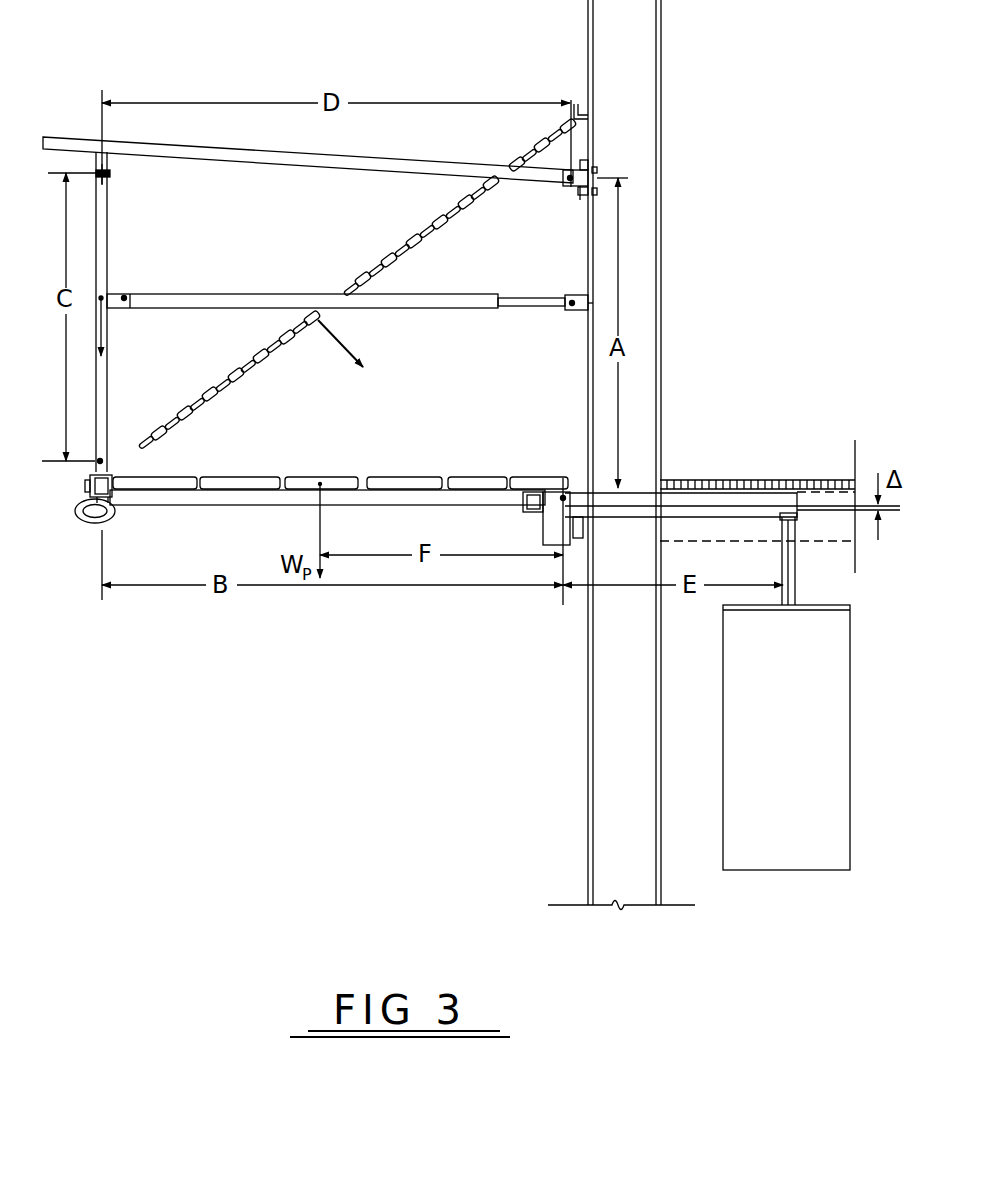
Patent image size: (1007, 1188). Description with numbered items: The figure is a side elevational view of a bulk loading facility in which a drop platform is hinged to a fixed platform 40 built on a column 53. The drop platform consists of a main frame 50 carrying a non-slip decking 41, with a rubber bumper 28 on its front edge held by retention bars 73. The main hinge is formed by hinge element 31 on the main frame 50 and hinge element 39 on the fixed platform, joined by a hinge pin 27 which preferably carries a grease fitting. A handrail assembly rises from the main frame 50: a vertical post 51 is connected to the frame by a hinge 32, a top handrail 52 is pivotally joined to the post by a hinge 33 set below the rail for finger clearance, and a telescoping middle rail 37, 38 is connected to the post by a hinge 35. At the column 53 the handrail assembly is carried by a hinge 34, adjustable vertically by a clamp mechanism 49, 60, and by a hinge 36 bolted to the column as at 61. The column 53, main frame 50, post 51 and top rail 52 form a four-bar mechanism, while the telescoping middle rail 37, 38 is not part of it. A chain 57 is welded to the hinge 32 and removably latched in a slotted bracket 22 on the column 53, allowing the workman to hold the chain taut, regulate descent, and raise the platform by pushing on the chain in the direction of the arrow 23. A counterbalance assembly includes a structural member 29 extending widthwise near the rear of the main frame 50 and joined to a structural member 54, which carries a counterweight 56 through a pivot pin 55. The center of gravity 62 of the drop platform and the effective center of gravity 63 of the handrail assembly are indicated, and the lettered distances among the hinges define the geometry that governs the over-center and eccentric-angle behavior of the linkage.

The bracket 22 is at (576, 104).
The arrow 23 is at (333, 343).
The hinge pin 27 is at (568, 479).
The rubber bumper 28 is at (75, 514).
The structural member 29 is at (522, 508).
The hinge element 31 is at (543, 536).
The hinge 32 is at (96, 460).
The hinge 33 is at (110, 177).
The hinge 34 is at (576, 188).
The hinge 35 is at (124, 295).
The hinge 36 is at (580, 296).
The telescoping middle rail 37 is at (470, 296).
The telescoping middle rail 38 is at (534, 298).
The hinge element 39 is at (584, 531).
The fixed platform 40 is at (688, 533).
The decking 41 is at (340, 476).
The clamp mechanism 49 is at (597, 169).
The main frame 50 is at (285, 506).
The vertical post 51 is at (107, 406).
The handrail 52 is at (258, 165).
The column 53 is at (662, 48).
The structural member 54 is at (760, 500).
The pivot pin 55 is at (793, 509).
The counterweight 56 is at (852, 684).
The chain 57 is at (270, 362).
The clamp mechanism 60 is at (581, 200).
The bolt 61 is at (590, 303).
The center of gravity 62 is at (322, 497).
The effective center of gravity 63 is at (108, 322).
The retention bar 73 is at (84, 486).